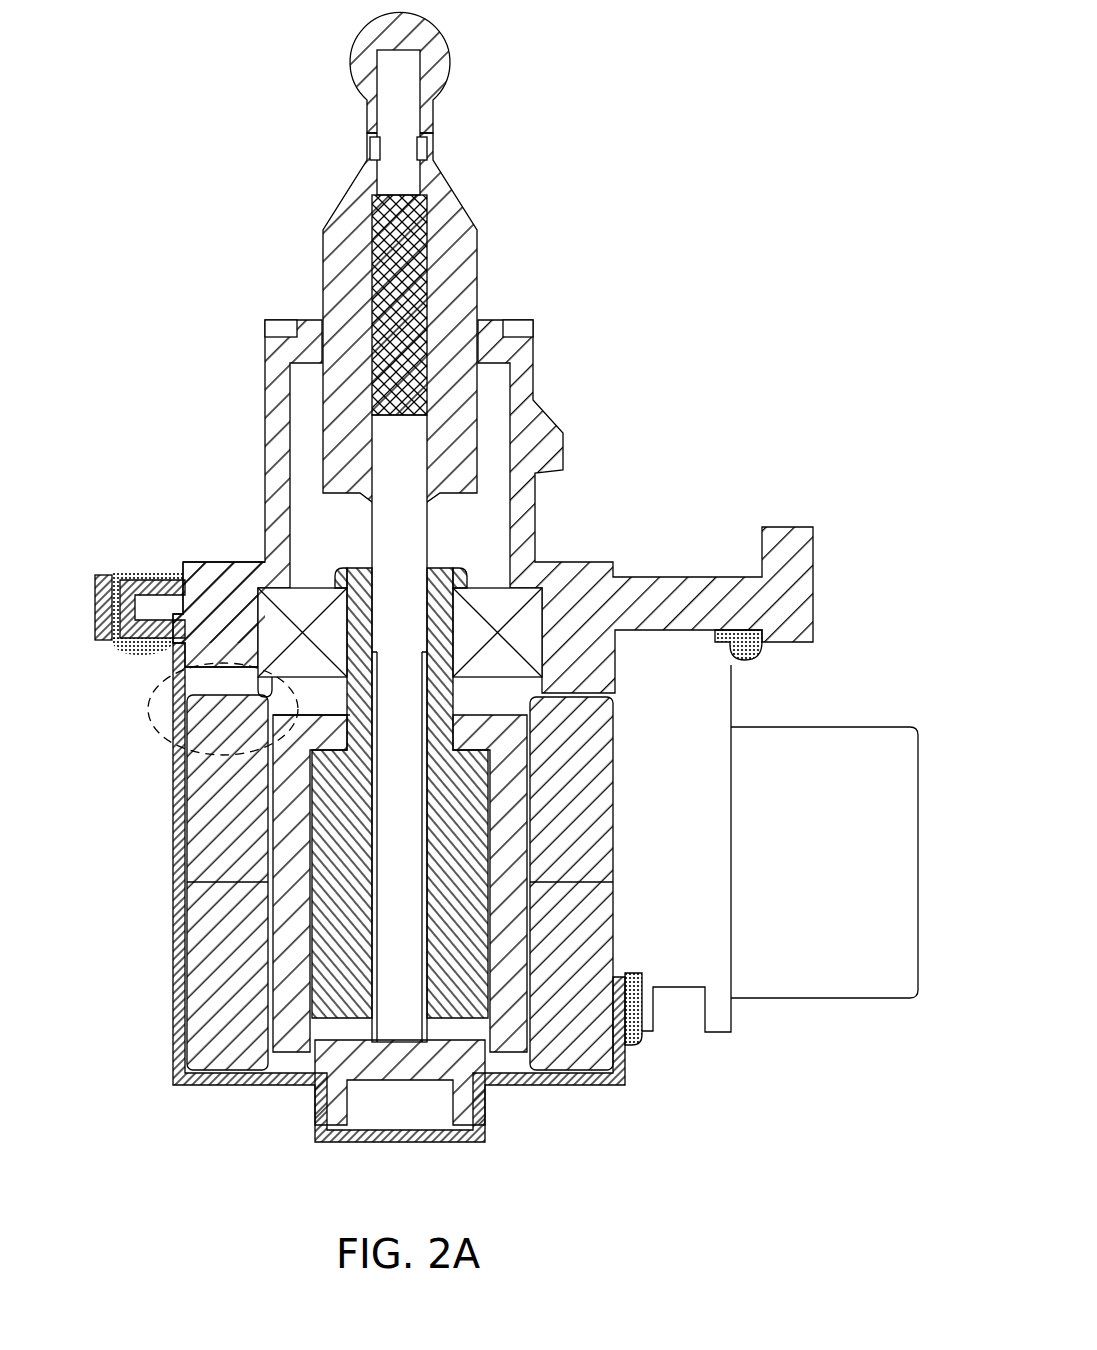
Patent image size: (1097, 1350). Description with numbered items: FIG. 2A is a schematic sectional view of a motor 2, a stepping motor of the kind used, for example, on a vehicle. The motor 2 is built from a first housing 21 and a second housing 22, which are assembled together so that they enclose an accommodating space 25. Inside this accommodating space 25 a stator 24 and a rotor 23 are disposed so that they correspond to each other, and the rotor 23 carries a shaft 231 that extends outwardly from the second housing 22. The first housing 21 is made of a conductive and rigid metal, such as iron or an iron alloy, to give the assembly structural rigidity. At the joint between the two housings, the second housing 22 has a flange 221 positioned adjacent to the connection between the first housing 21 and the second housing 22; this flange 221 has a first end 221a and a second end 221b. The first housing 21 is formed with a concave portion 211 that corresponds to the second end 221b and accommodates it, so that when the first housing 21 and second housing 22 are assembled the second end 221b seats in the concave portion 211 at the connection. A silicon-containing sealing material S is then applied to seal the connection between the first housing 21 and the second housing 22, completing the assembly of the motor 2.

The motor 2 is at (195, 18).
The first housing 21 is at (178, 1055).
The concave portion 211 is at (95, 632).
The second housing 22 is at (555, 432).
The flange 221 is at (218, 562).
The first end 221a is at (190, 690).
The second end 221b is at (140, 577).
The rotor 23 is at (290, 1040).
The shaft 231 is at (413, 222).
The stator 24 is at (197, 800).
The accommodating space 25 is at (488, 545).
The silicon-containing sealing material S is at (95, 590).